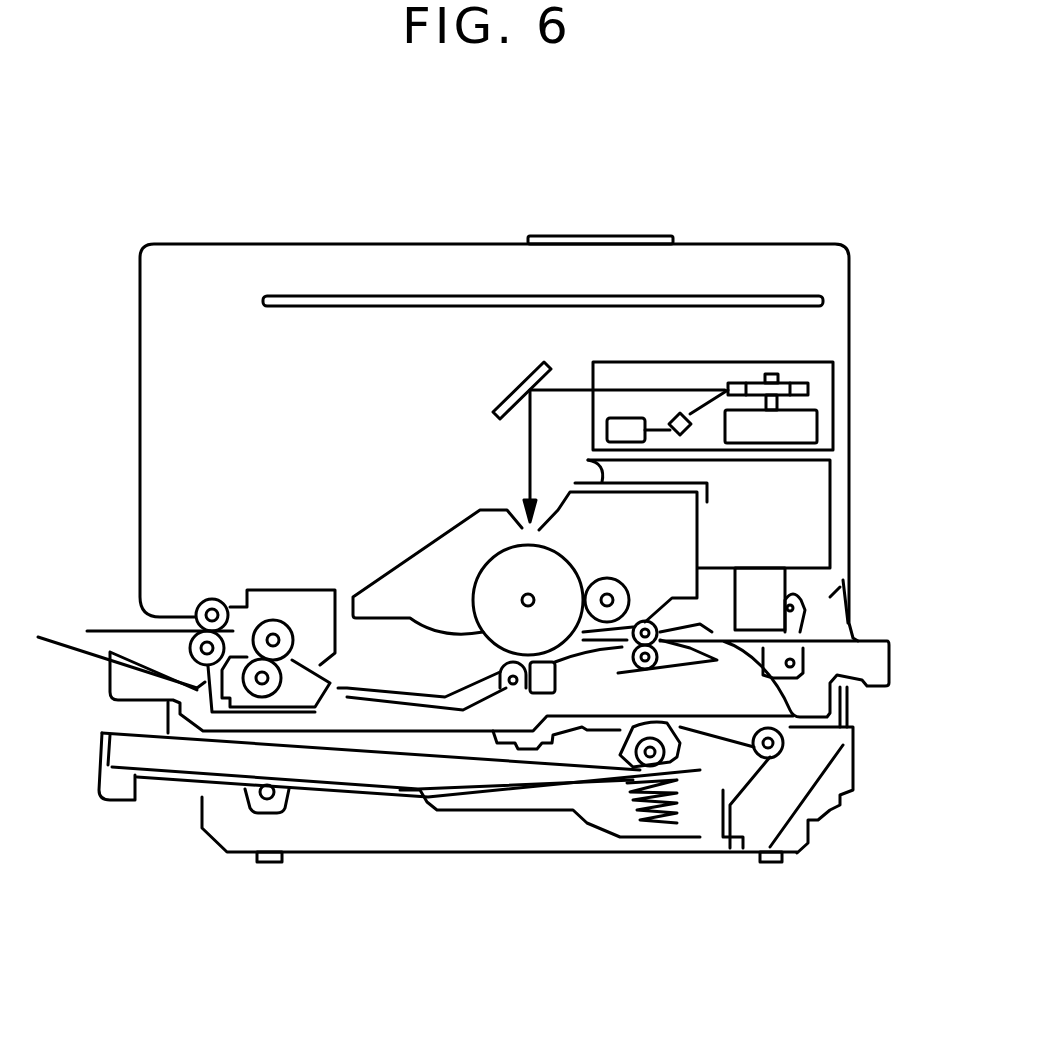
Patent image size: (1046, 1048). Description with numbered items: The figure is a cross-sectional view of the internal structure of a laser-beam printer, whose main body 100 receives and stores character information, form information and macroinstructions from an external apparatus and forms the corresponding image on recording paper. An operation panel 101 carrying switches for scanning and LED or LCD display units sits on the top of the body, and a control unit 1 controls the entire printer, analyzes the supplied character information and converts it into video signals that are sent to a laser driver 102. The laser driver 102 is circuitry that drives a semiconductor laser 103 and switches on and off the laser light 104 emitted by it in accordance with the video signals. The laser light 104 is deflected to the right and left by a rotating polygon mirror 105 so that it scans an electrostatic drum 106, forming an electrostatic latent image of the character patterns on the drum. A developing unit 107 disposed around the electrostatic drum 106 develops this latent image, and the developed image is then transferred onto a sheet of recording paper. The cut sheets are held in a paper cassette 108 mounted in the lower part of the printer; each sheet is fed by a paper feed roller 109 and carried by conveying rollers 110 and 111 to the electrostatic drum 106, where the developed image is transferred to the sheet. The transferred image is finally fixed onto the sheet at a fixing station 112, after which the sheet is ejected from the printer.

The control unit 1 is at (800, 300).
The main body 100 is at (767, 244).
The operation panel 101 is at (595, 236).
The laser driver 102 is at (607, 428).
The semiconductor laser 103 is at (690, 438).
The laser light 104 is at (693, 390).
The rotating polygon mirror 105 is at (808, 388).
The electrostatic drum 106 is at (503, 567).
The developing unit 107 is at (420, 588).
The paper cassette 108 is at (100, 800).
The paper feed roller 109 is at (647, 757).
The conveying roller 110 is at (768, 745).
The conveying roller 111 is at (645, 662).
The fixing station 112 is at (285, 588).